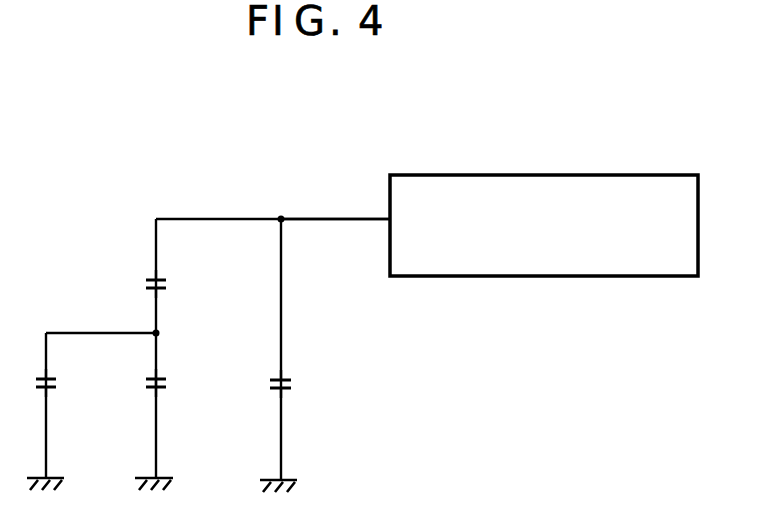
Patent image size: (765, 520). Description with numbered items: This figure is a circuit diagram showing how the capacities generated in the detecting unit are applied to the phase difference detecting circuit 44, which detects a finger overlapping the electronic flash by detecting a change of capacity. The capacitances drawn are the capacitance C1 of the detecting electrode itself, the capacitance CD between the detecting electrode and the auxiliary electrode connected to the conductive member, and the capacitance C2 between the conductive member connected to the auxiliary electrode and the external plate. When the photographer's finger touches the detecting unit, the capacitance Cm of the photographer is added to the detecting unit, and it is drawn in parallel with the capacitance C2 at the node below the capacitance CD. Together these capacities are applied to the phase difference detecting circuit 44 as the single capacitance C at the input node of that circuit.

The phase difference detecting circuit 44 is at (534, 175).
The capacitance C is at (334, 205).
The capacitance CD is at (179, 287).
The capacitance Cm is at (72, 383).
The capacitance C1 is at (298, 384).
The capacitance C2 is at (175, 383).